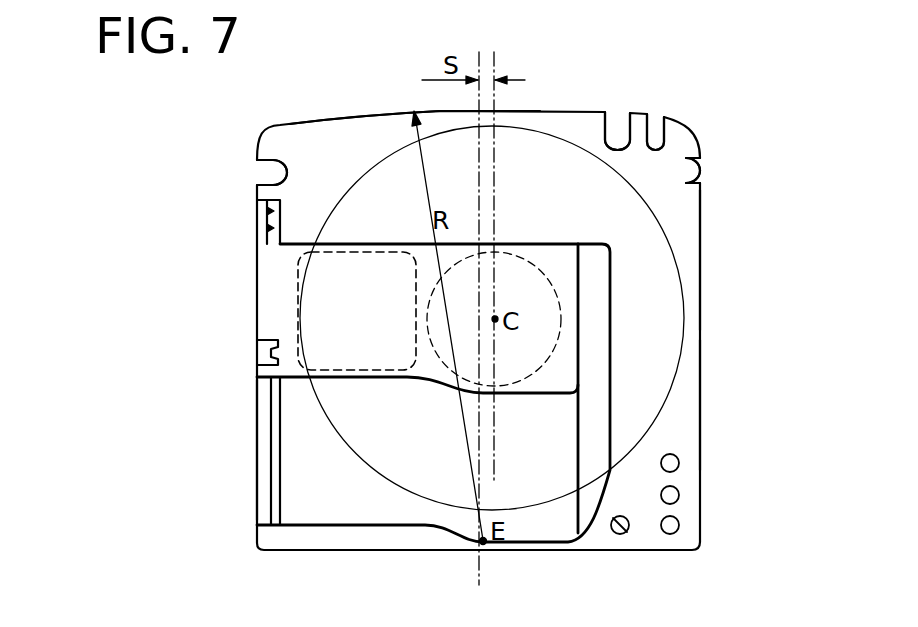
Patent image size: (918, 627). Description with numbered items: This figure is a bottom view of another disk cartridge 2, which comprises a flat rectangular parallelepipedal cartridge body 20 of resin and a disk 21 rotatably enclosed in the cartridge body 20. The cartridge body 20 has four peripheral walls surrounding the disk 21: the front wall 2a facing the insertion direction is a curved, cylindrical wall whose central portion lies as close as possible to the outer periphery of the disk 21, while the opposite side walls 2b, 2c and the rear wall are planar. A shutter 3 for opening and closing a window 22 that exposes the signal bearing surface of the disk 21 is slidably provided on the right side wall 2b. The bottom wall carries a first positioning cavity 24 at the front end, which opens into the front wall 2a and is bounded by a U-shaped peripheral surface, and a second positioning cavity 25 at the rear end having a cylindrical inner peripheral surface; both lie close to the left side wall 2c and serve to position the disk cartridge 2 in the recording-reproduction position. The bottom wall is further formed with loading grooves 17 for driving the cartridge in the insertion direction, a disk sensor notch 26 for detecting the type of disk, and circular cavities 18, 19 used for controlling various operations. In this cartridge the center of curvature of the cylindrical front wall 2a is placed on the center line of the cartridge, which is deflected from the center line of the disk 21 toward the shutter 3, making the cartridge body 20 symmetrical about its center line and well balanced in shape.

The disk cartridge 2 is at (688, 208).
The front wall 2a is at (365, 115).
The right side wall 2b is at (702, 403).
The left side wall 2c is at (258, 417).
The shutter 3 is at (397, 352).
The loading grooves 17 is at (262, 167).
The circular cavities 18 is at (676, 461).
The circular cavity 19 is at (677, 527).
The cartridge body 20 is at (688, 248).
The disk 21 is at (683, 327).
The window 22 is at (371, 366).
The first positioning cavity 24 is at (618, 127).
The second positioning cavity 25 is at (622, 534).
The disk sensor notch 26 is at (655, 125).